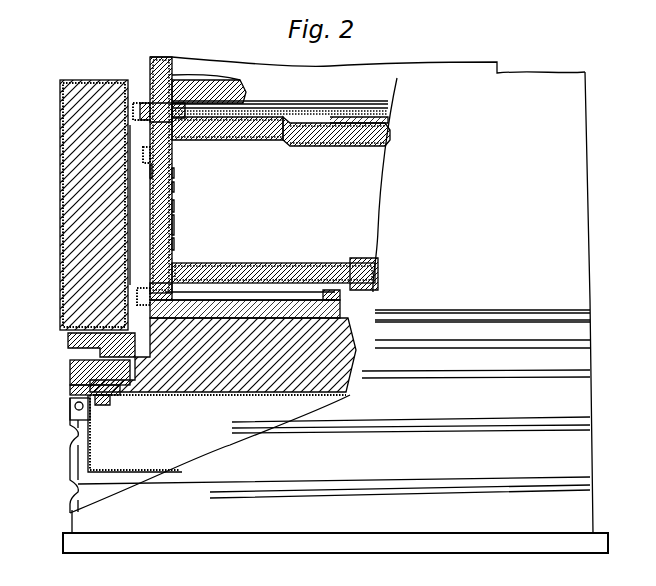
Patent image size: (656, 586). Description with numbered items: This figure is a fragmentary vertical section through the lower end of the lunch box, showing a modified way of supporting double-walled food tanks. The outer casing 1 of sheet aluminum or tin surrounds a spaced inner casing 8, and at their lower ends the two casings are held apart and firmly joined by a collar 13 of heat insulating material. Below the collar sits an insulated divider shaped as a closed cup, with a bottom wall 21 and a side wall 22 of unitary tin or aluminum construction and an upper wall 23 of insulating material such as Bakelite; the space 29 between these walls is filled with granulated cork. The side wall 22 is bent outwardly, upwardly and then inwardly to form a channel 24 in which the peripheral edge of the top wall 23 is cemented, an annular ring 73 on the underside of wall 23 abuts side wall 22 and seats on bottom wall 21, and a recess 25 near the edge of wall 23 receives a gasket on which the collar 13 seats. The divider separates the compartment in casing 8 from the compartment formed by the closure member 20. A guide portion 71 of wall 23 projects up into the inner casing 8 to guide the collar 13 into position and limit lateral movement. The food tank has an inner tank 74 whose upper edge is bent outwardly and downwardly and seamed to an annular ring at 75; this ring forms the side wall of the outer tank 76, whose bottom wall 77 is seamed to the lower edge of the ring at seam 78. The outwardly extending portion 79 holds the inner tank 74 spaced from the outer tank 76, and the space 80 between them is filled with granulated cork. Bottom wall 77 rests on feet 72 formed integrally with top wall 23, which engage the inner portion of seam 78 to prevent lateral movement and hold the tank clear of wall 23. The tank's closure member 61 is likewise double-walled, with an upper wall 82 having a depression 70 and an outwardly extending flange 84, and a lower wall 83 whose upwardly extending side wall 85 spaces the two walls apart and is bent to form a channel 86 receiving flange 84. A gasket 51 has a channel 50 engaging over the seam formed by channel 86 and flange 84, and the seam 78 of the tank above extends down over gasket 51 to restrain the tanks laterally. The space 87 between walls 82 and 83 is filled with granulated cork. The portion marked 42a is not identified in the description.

The outer casing 1 is at (60, 165).
The inner casing 8 is at (130, 193).
The collar 13 is at (68, 336).
The closure member 20 is at (60, 460).
The bottom wall 21 is at (182, 400).
The side wall 22 is at (96, 412).
The upper wall 23 is at (216, 298).
The channel 24 is at (70, 368).
The recess 25 is at (72, 388).
The space 29 is at (262, 388).
The door panel 42a is at (335, 305).
The channel 50 is at (172, 148).
The gasket 51 is at (181, 94).
The closure member 61 is at (276, 104).
The depression 70 is at (318, 113).
The guide portion 71 is at (223, 355).
The feet 72 is at (186, 275).
The annular ring 73 is at (108, 400).
The inner tank 74 is at (174, 206).
The annular ring 75 is at (150, 172).
The outer tank 76 is at (174, 244).
The bottom wall 77 is at (298, 264).
The seam 78 is at (138, 103).
The outwardly extending portion 79 is at (173, 186).
The space 80 is at (174, 226).
The upper wall 82 is at (248, 102).
The lower wall 83 is at (256, 143).
The flange 84 is at (199, 141).
The side wall 85 is at (174, 172).
The channel 86 is at (190, 78).
The space 87 is at (352, 113).